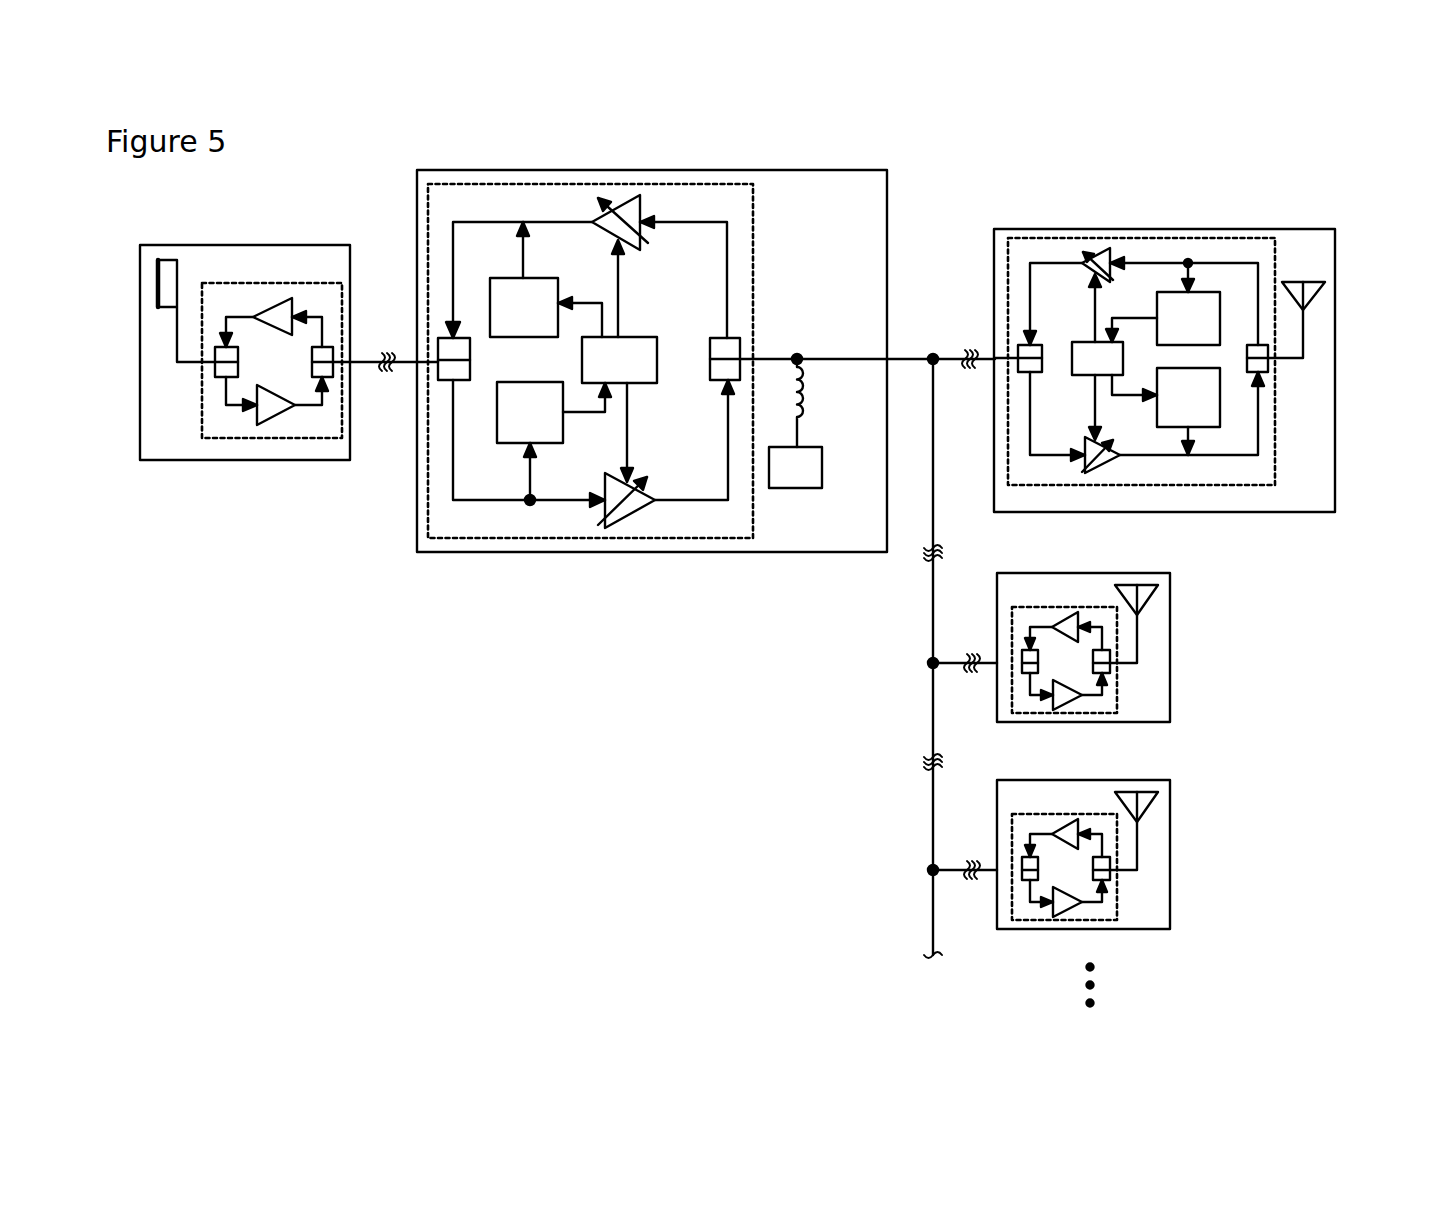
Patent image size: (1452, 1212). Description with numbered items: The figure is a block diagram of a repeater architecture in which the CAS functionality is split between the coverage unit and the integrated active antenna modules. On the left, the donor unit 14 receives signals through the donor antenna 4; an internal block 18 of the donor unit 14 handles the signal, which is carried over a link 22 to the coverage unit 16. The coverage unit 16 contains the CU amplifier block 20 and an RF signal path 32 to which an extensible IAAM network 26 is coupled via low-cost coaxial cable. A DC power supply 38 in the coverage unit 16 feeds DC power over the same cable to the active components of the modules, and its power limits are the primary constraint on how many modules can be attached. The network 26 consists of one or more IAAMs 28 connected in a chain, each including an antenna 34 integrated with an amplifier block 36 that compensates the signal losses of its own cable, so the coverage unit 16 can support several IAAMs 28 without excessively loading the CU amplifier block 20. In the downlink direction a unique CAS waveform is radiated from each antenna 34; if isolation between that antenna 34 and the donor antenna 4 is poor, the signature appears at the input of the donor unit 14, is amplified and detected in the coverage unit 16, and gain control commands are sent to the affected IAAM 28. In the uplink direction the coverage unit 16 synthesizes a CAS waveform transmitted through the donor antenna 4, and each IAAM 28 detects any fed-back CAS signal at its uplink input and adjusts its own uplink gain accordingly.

The donor antenna 4 is at (177, 280).
The donor unit 14 is at (243, 245).
The head end bidirectional amplifier 18 is at (265, 283).
The cable link 22 is at (360, 362).
The coverage unit 16 is at (840, 170).
The CU amplifier block 20 is at (753, 267).
The RF signal path 32 is at (825, 359).
The DC power supply 38 is at (822, 465).
The IAAM network 26 is at (1367, 906).
The integrated active antenna module 28 is at (1335, 375).
The antenna 34 is at (1320, 290).
The amplifier block 36 is at (1275, 430).